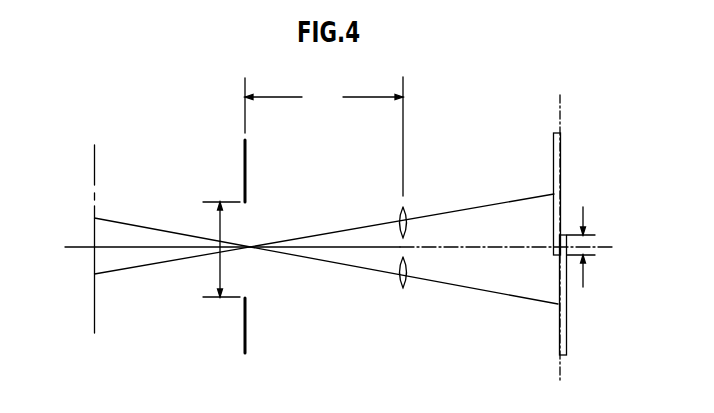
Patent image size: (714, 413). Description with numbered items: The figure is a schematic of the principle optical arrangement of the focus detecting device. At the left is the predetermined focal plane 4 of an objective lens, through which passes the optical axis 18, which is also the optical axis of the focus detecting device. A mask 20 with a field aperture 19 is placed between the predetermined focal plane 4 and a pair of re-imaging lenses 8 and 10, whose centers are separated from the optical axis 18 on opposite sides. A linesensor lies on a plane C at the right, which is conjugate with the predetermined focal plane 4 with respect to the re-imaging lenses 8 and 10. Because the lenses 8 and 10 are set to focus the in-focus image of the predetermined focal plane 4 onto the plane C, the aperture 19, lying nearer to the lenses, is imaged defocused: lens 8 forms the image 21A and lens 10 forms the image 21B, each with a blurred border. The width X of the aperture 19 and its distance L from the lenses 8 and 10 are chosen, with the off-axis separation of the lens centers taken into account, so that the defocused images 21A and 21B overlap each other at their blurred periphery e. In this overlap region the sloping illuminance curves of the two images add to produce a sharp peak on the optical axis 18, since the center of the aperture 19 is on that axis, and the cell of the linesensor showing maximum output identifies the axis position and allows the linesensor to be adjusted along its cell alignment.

The predetermined focal plane 4 is at (95, 148).
The optical axis 18 is at (74, 247).
The mask 20 is at (243, 180).
The field aperture 19 is at (247, 280).
The re-imaging lens 8 is at (403, 207).
The re-imaging lens 10 is at (402, 288).
The image of the aperture 21A is at (553, 172).
The image of the aperture 21B is at (567, 313).
The linesensor plane C is at (561, 108).
The distance of the aperture from the lenses L is at (324, 136).
The width of the aperture X is at (218, 225).
The blurred periphery e is at (591, 247).